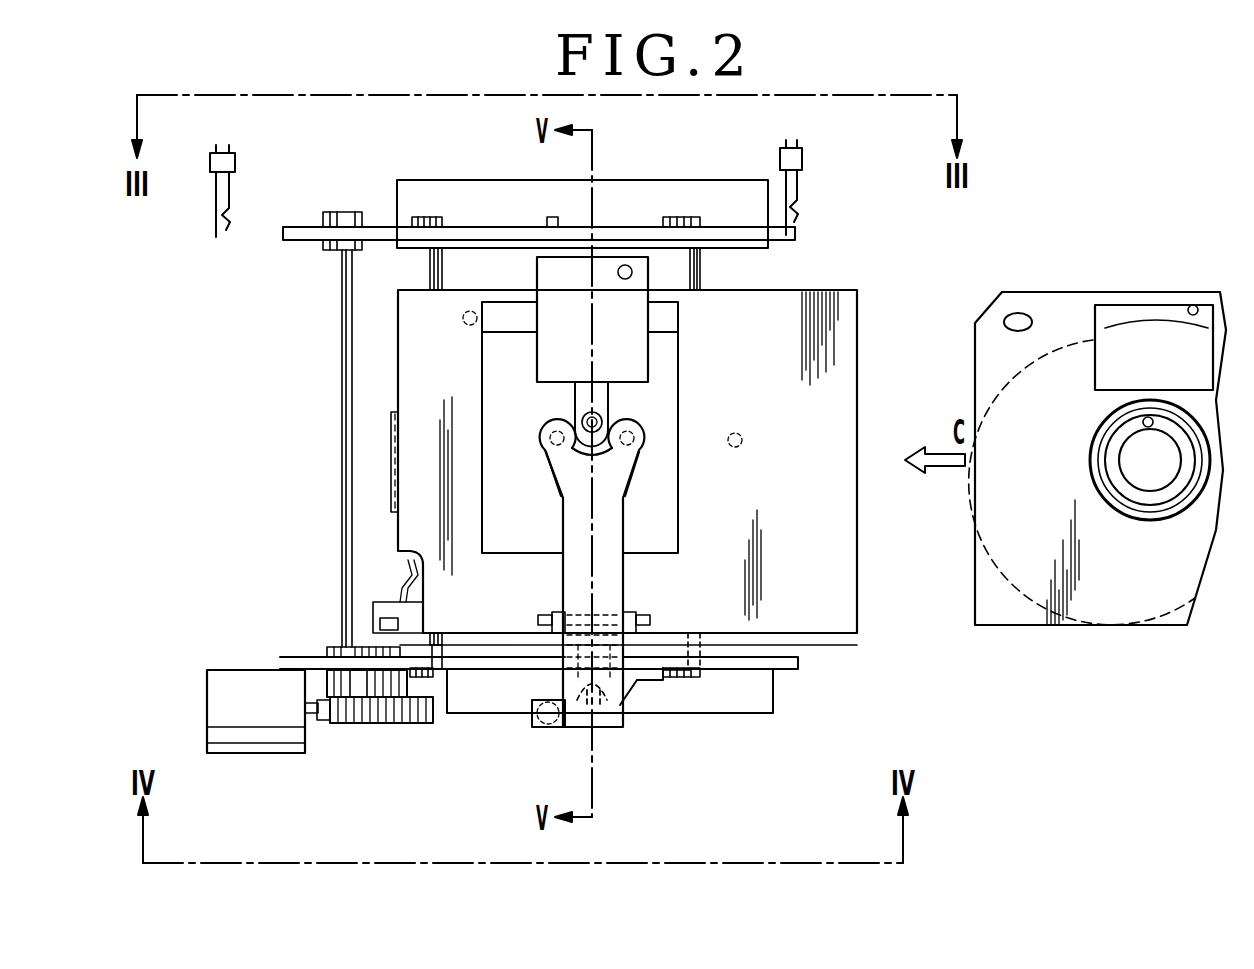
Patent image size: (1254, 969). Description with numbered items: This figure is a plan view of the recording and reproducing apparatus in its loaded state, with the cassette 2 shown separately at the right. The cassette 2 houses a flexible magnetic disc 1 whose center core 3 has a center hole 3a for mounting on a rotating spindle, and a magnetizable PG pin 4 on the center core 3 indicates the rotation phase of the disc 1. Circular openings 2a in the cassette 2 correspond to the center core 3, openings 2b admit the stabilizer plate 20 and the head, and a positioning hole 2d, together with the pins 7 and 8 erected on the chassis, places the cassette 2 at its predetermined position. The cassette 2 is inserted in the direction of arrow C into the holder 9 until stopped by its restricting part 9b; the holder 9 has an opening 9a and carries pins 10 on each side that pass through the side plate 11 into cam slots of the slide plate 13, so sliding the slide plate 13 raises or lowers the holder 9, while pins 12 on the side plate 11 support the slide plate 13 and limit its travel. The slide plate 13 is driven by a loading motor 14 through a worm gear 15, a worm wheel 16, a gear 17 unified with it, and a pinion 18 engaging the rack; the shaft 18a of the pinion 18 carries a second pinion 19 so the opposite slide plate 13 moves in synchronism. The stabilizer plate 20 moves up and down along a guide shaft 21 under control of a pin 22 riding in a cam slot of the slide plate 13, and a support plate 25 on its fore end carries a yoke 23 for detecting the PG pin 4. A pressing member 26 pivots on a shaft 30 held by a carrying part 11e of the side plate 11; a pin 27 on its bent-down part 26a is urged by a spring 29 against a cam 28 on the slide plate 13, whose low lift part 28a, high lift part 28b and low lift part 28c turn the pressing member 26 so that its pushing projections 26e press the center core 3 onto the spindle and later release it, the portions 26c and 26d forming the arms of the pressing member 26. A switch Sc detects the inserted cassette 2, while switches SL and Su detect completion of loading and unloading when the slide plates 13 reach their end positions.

The flexible magnetic disc 1 is at (1098, 340).
The cassette 2 is at (977, 381).
The circular openings 2a is at (1120, 506).
The openings 2b is at (1196, 305).
The positioning hole 2d is at (1024, 314).
The center core 3 is at (1105, 461).
The center hole 3a is at (1160, 492).
The PG pin 4 is at (1142, 422).
The pin 7 is at (735, 432).
The pin 8 is at (465, 322).
The holder 9 is at (846, 576).
The opening 9a is at (679, 540).
The restricting part 9b is at (391, 452).
The pins 10 is at (429, 266).
The side plate 11 is at (740, 200).
The carrying part 11e is at (556, 612).
The pins 12 is at (426, 216).
The slide plate 13 is at (302, 229).
The loading motor 14 is at (252, 746).
The worm gear 15 is at (320, 724).
The worm wheel 16 is at (410, 724).
The gear 17 is at (387, 698).
The pinion 18 is at (329, 651).
The shaft 18a is at (341, 372).
The pinion 19 is at (345, 211).
The stabilizer plate 20 is at (537, 345).
The guide shaft 21 is at (626, 264).
The pin 22 is at (551, 216).
The yoke 23 is at (604, 419).
The support plate 25 is at (574, 403).
The pressing member 26 is at (575, 527).
The bent-down part 26a is at (580, 728).
The lever arm 26c is at (631, 473).
The lever arm 26d is at (562, 470).
The pushing projections 26e is at (551, 445).
The pin 27 is at (603, 705).
The cam 28 is at (652, 681).
The low lift part 28a is at (690, 680).
The high lift part 28b is at (670, 682).
The low lift part 28c is at (545, 688).
The spring 29 is at (546, 728).
The shaft 30 is at (538, 620).
The switch SU Su is at (236, 160).
The switch SL is at (803, 160).
The switch SC Sc is at (385, 615).